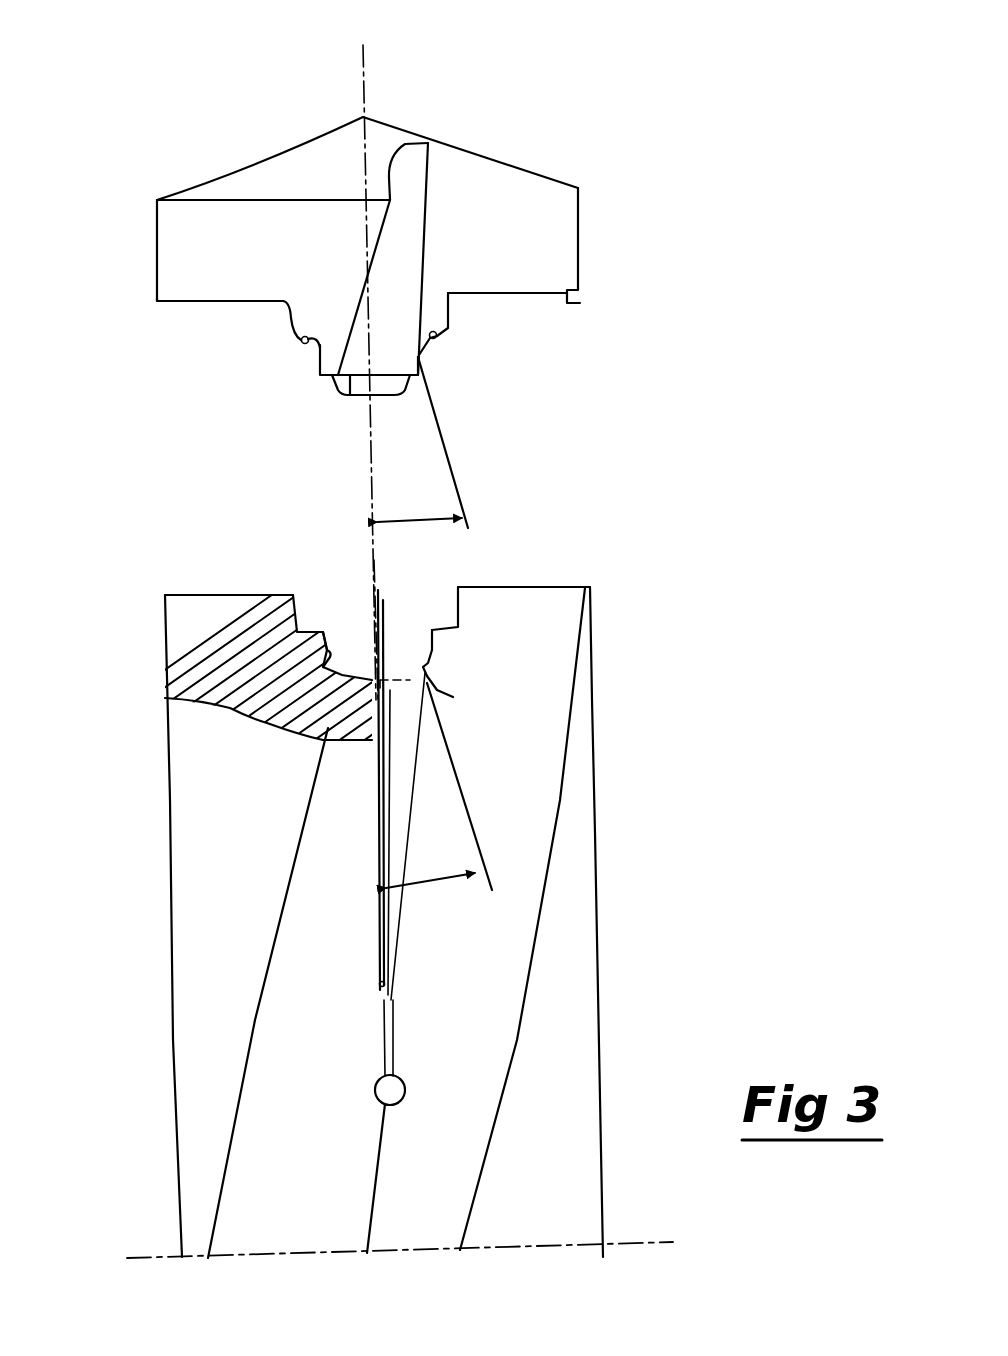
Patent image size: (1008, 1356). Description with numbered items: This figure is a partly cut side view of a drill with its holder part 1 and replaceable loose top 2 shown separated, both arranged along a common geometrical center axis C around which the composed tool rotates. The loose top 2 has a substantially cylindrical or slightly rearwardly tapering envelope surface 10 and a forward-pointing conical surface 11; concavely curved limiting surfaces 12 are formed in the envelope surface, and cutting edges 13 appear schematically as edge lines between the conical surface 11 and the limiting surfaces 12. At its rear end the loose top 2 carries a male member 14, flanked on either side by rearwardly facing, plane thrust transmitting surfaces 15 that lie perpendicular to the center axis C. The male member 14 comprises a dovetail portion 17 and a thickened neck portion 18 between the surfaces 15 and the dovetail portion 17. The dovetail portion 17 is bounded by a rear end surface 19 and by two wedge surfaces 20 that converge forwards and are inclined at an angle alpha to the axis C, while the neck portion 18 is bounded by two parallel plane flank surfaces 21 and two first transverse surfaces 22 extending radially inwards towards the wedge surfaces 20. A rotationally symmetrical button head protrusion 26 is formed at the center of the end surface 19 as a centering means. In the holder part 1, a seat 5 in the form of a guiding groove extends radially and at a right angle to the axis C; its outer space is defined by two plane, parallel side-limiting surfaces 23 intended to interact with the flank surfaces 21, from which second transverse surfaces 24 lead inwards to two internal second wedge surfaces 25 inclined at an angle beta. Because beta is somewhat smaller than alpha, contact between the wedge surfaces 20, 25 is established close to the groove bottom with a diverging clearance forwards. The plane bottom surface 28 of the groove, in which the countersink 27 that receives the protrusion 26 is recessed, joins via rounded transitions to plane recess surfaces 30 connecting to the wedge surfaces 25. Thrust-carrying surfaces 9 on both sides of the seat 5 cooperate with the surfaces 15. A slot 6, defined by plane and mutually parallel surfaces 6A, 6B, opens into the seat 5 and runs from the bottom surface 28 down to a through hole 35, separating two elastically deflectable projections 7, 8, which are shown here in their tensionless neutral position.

The geometrical center axis C is at (365, 62).
The holder part 1 is at (354, 881).
The loose top 2 is at (382, 293).
The seat 5 is at (366, 612).
The slot 6 is at (378, 917).
The slot-defining surface 6A is at (378, 995).
The slot-defining surface 6B is at (392, 1007).
The projection 7 is at (578, 938).
The projection 8 is at (196, 958).
The thrust-carrying surface 9 is at (177, 593).
The envelope surface 10 is at (158, 245).
The conical surface 11 is at (303, 153).
The limiting surface 12 is at (448, 175).
The cutting edge 13 is at (407, 145).
The male member 14 is at (303, 382).
The thrust transmitting surface 15 is at (165, 307).
The dovetail portion 17 is at (421, 363).
The neck portion 18 is at (440, 334).
The rear end surface 19 is at (352, 389).
The wedge surface 20 is at (313, 360).
The flank surface 21 is at (280, 312).
The first transverse surface 22 is at (309, 326).
The side-limiting surface 23 is at (307, 594).
The second transverse surface 24 is at (325, 613).
The second wedge surface 25 is at (233, 713).
The button head protrusion 26 is at (387, 394).
The countersink 27 is at (348, 742).
The bottom surface 28 is at (397, 677).
The recess surface 30 is at (292, 722).
The through hole 35 is at (400, 1098).
The angle of inclination of the wedge surfaces alpha is at (419, 502).
The angle of inclination of the internal wedge surfaces beta is at (430, 864).